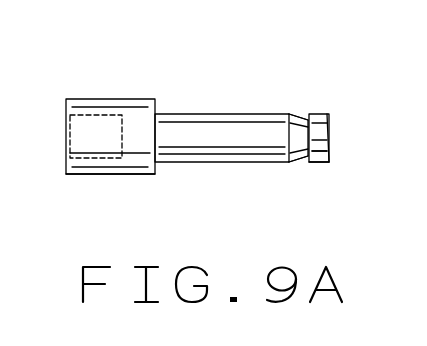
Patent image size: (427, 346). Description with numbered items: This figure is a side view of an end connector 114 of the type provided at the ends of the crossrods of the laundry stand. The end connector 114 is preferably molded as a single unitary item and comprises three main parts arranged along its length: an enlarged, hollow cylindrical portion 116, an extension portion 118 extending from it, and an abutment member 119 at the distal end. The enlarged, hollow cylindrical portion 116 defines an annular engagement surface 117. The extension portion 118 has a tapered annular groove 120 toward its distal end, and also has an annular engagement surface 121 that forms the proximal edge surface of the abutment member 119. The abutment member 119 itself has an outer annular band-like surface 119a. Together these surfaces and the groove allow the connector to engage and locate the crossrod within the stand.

The end connector 114 is at (338, 75).
The enlarged, hollow cylindrical portion 116 is at (108, 98).
The annular engagement surface 117 is at (156, 172).
The extension portion 118 is at (230, 113).
The abutment member 119 is at (342, 137).
The outer annular band-like surface 119a is at (323, 163).
The tapered annular groove 120 is at (306, 116).
The annular engagement surface 121 is at (302, 163).